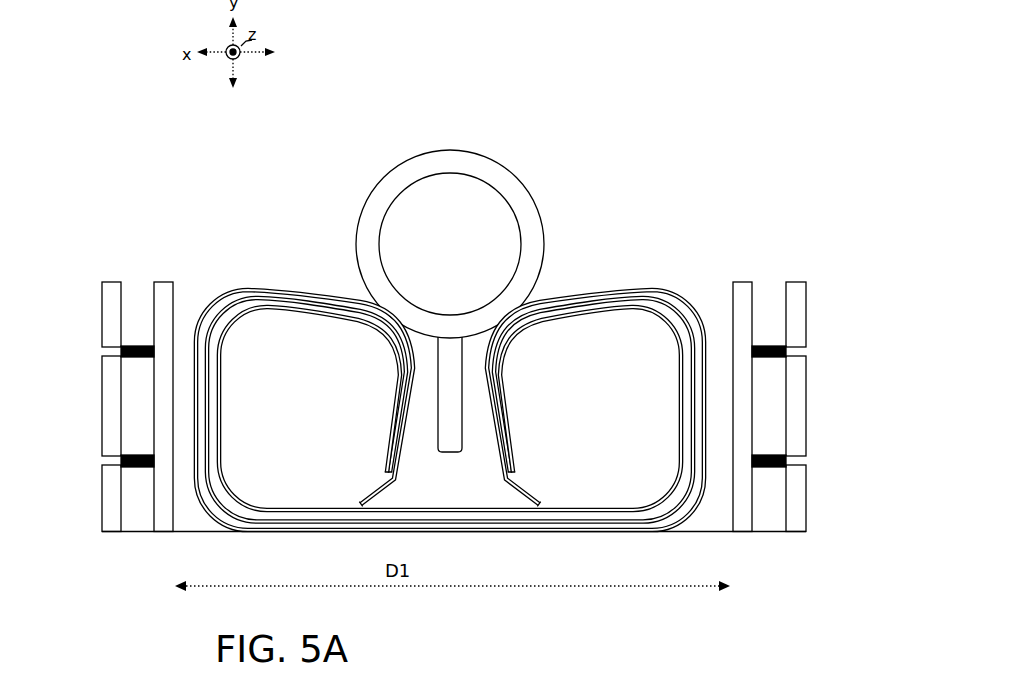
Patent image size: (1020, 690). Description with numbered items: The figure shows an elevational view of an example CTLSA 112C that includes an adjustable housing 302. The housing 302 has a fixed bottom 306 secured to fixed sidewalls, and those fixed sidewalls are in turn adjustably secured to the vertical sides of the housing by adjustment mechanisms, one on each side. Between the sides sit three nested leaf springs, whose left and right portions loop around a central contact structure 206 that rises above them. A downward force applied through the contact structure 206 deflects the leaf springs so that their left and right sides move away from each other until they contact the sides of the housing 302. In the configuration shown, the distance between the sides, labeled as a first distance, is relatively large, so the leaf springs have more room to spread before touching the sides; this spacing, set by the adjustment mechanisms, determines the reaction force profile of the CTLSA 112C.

The CTLSA 112C is at (688, 50).
The contact structure 206 is at (500, 165).
The housing 302 is at (483, 389).
The bottom 306 is at (758, 532).